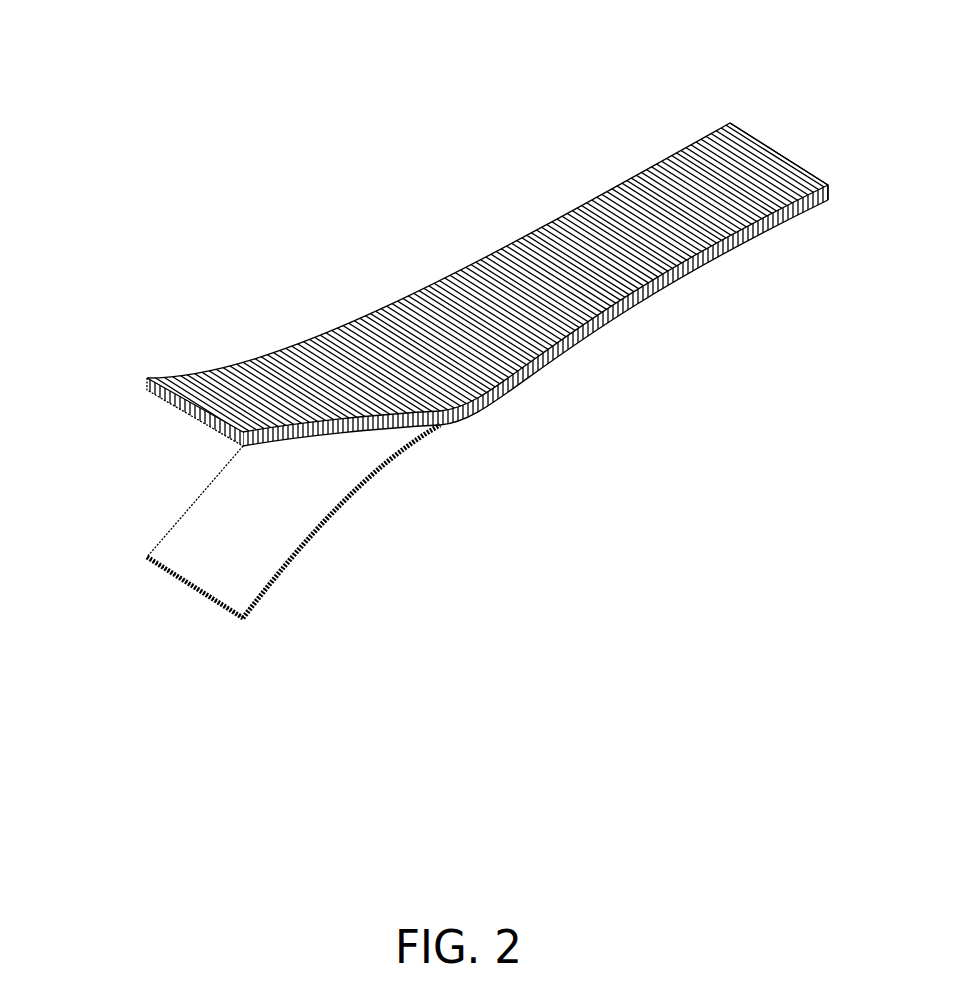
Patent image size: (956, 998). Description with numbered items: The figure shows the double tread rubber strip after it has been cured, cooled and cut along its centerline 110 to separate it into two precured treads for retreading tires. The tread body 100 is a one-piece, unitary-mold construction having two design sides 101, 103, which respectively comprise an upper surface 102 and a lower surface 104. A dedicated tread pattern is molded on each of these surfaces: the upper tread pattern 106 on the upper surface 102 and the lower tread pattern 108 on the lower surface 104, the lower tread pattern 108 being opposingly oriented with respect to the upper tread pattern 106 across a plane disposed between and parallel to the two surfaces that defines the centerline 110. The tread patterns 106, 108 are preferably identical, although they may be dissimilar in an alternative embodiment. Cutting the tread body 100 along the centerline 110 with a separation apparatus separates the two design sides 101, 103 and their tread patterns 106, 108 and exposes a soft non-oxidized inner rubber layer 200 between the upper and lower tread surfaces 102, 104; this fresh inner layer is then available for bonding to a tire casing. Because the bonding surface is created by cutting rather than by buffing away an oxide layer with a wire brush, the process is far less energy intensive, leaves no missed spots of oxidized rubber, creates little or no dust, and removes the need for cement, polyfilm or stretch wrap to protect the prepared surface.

The tread body 100 is at (728, 95).
The first design side 101 is at (487, 308).
The upper surface 102 is at (262, 393).
The second design side 103 is at (341, 541).
The lower surface 104 is at (281, 598).
The upper tread pattern 106 is at (555, 283).
The lower tread pattern 108 is at (589, 354).
The centerline 110 is at (830, 188).
The soft non-oxidized inner rubber layer 200 is at (190, 435).